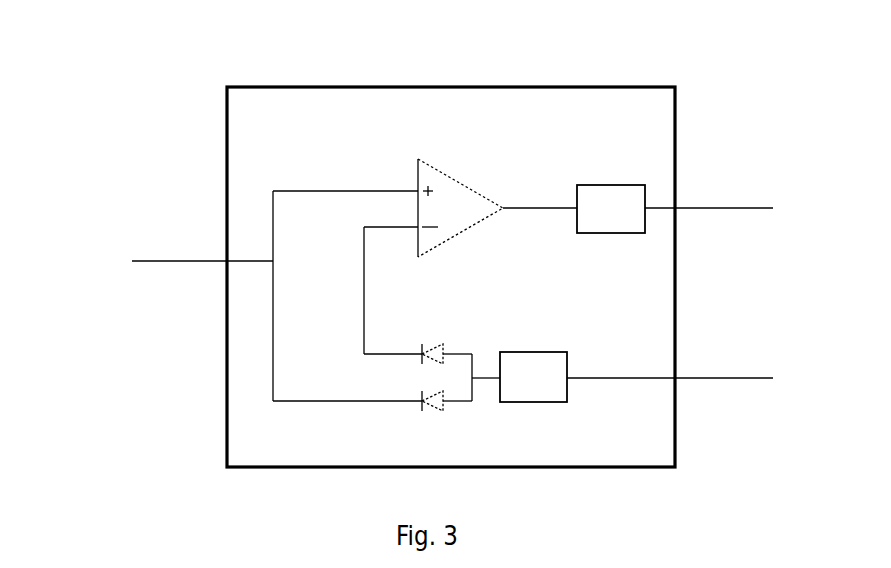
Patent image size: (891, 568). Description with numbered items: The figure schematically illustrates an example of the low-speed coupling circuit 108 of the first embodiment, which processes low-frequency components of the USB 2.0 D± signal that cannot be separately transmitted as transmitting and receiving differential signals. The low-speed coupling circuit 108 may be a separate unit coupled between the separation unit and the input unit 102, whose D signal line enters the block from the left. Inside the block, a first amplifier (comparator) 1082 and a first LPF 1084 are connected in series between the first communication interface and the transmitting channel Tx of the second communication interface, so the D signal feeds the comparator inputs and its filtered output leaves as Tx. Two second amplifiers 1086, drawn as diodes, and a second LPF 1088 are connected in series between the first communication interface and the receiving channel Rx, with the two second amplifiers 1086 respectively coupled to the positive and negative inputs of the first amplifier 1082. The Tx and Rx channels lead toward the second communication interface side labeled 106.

The input unit 102 is at (157, 245).
The transmission lines Tx/Rx 106 is at (722, 273).
The low-speed coupling circuit 108 is at (402, 86).
The first amplifier (comparator) 1082 is at (450, 178).
The first LPF 1084 is at (615, 184).
The second amplifiers 1086 is at (443, 412).
The second LPF 1088 is at (534, 403).